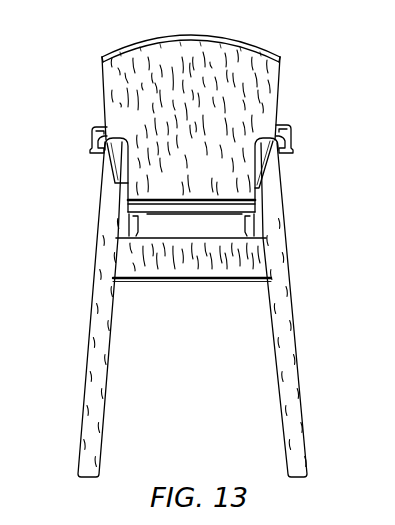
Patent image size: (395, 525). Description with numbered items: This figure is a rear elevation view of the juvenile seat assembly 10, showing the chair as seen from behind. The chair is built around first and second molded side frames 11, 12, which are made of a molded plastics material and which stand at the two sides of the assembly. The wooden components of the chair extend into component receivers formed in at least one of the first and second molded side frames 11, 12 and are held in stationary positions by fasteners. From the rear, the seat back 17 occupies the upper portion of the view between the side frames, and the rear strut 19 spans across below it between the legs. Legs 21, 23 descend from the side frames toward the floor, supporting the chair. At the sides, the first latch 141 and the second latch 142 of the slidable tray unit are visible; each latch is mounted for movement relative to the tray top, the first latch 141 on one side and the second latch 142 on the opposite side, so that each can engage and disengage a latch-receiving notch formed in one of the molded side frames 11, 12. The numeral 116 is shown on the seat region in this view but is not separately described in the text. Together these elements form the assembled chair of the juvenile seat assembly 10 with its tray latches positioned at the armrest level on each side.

The juvenile seat assembly 10 is at (289, 44).
The seat back 17 is at (131, 45).
The second molded side frame 12 is at (127, 126).
The first molded side frame 11 is at (263, 128).
The second latch 142 is at (92, 156).
The first latch 141 is at (291, 154).
The seat 116 is at (163, 197).
The rear strut 19 is at (166, 281).
The leg 23 is at (88, 381).
The leg 21 is at (279, 370).